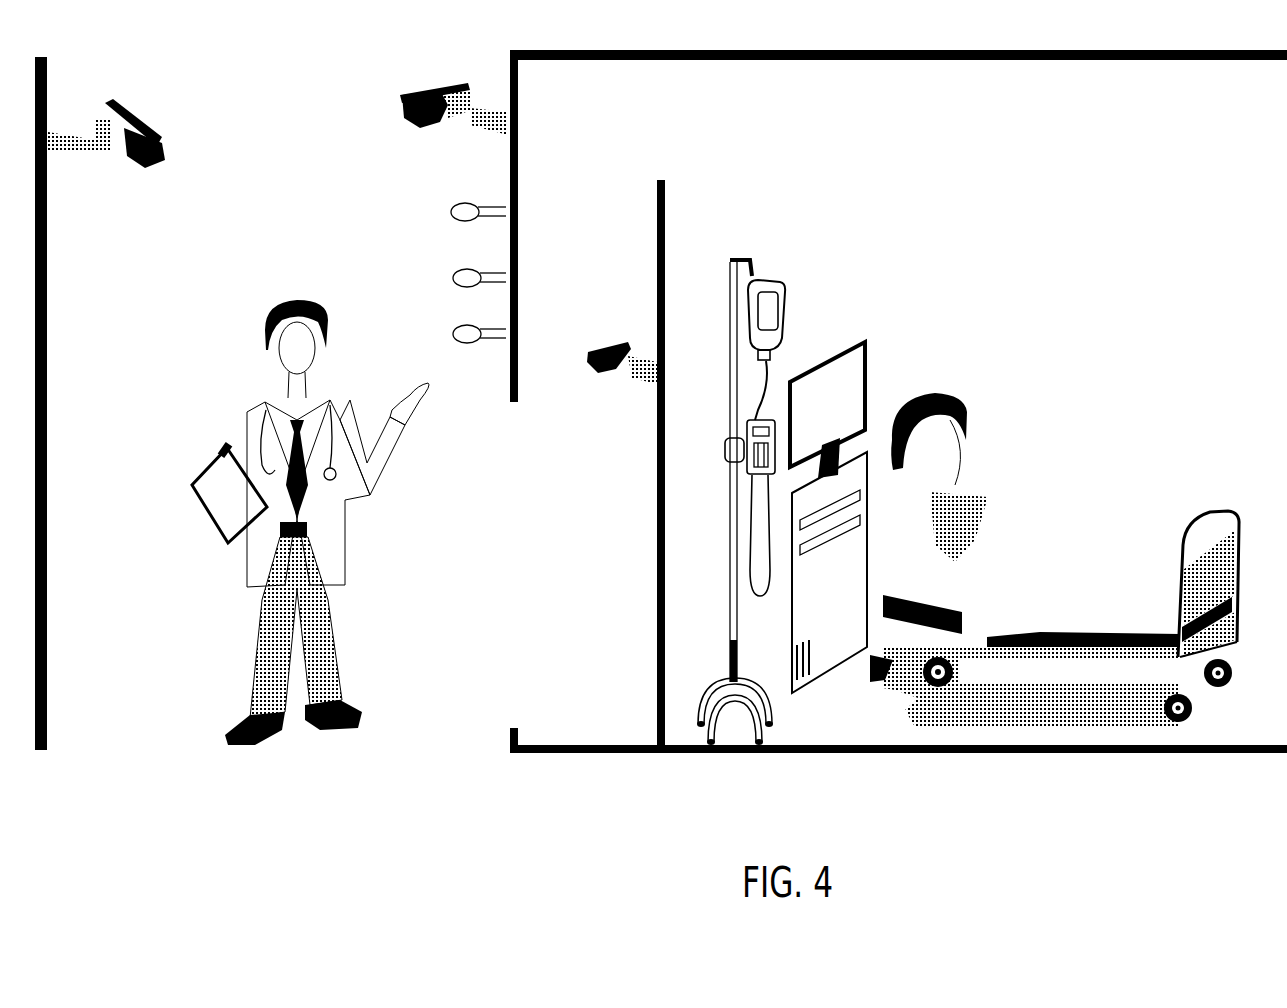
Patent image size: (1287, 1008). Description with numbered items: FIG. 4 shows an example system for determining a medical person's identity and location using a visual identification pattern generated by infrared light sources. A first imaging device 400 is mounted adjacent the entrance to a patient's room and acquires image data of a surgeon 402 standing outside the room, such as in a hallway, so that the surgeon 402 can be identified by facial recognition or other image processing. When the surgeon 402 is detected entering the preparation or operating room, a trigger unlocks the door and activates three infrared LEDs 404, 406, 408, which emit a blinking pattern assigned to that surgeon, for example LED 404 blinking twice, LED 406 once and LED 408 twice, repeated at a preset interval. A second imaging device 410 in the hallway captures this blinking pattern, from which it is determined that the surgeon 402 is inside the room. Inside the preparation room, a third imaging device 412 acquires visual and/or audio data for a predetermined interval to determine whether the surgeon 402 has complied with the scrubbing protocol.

The first imaging device 400 is at (443, 90).
The surgeon 402 is at (273, 305).
The infrared LED 404 is at (470, 200).
The infrared LED 406 is at (478, 275).
The infrared LED 408 is at (478, 330).
The second imaging device 410 is at (130, 113).
The third imaging device 412 is at (633, 392).